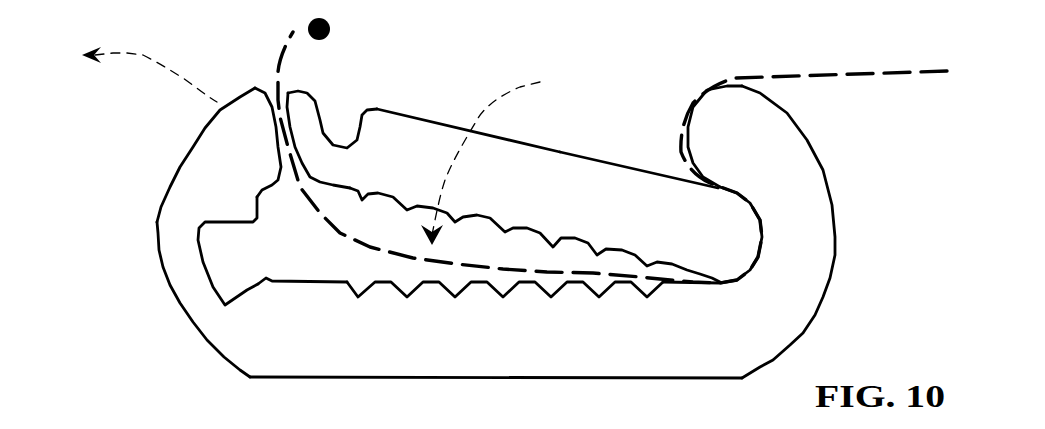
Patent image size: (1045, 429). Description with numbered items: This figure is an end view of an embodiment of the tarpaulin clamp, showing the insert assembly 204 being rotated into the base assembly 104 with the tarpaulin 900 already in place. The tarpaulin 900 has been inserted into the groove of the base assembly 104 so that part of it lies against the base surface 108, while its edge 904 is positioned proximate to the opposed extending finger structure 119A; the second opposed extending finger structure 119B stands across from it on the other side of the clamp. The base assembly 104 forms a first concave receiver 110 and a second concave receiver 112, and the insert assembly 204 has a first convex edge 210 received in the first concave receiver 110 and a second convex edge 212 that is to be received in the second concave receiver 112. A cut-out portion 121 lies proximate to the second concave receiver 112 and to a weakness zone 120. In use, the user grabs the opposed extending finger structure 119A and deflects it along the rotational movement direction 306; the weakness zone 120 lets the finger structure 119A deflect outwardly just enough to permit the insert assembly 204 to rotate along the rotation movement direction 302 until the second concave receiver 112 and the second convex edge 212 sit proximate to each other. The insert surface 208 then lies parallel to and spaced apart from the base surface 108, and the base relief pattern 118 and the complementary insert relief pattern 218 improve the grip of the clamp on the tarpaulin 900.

The base assembly 104 is at (157, 225).
The base surface 108 is at (333, 283).
The first concave receiver 110 is at (757, 202).
The second concave receiver 112 is at (262, 188).
The base relief pattern 118 is at (510, 285).
The opposed extending finger structure 119A is at (263, 172).
The opposed extending finger structure 119B is at (780, 147).
The weakness zone 120 is at (190, 285).
The cut-out portion 121 is at (253, 272).
The insert assembly 204 is at (632, 170).
The insert surface 208 is at (388, 198).
The first convex edge 210 is at (753, 233).
The second convex edge 212 is at (293, 97).
The insert relief pattern 218 is at (508, 224).
The rotation movement direction 302 is at (507, 90).
The rotational movement direction 306 is at (143, 58).
The tarpaulin 900 is at (890, 75).
The edge 904 is at (308, 25).